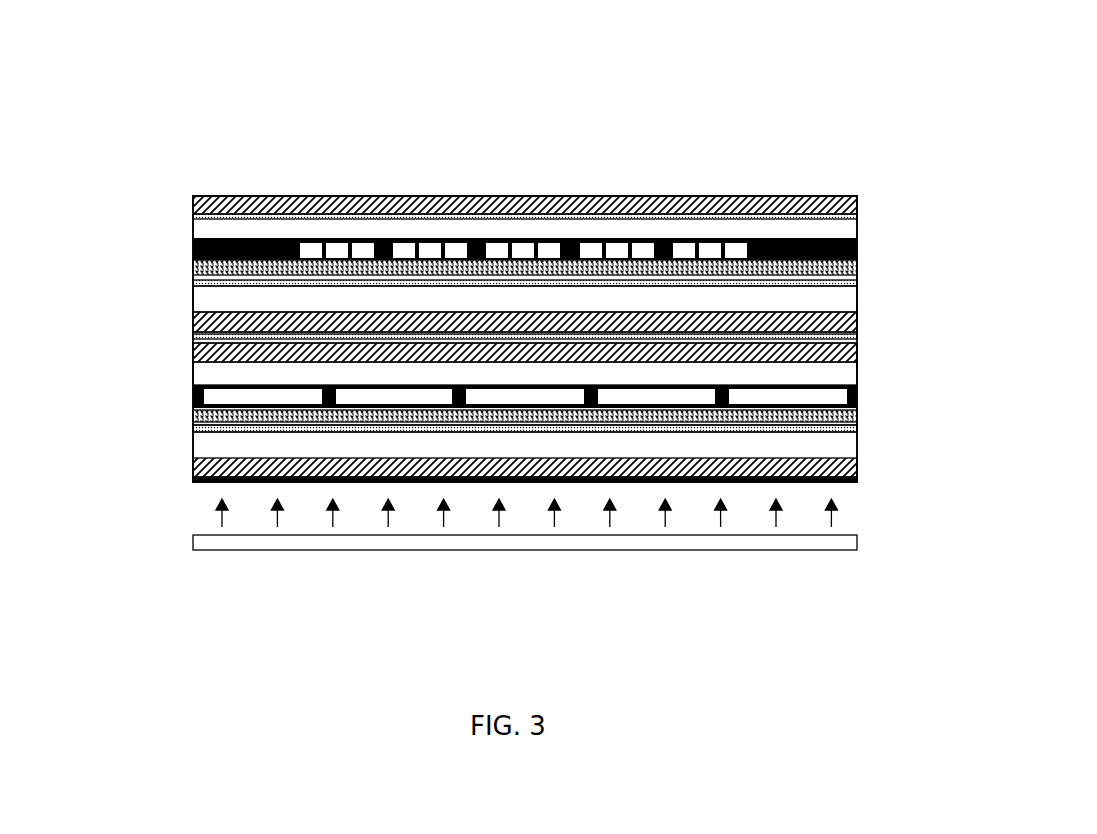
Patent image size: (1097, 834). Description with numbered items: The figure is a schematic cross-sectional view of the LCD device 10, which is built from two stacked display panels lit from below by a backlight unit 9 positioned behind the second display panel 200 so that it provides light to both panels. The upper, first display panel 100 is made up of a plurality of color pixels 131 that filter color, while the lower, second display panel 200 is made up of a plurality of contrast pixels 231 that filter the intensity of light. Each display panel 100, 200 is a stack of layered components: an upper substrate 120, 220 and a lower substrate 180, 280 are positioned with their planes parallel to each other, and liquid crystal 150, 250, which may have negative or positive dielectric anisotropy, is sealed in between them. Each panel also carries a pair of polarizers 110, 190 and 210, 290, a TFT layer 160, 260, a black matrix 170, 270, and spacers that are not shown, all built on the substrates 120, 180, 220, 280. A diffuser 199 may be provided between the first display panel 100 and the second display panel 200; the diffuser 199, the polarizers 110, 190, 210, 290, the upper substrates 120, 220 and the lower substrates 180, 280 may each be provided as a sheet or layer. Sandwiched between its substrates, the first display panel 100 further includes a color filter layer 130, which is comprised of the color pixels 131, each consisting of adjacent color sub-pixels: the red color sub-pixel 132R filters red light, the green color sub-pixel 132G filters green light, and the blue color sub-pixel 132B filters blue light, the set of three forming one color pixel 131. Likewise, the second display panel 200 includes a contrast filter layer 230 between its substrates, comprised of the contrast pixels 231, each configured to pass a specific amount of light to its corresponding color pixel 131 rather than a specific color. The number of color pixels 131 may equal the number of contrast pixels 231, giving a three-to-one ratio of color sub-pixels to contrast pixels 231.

The backlight unit 9 is at (700, 550).
The LCD device 10 is at (875, 143).
The first display panel 100 is at (898, 197).
The second display panel 200 is at (898, 340).
The polarizer 110 is at (190, 203).
The upper substrate 120 is at (190, 217).
The color filter layer 130 is at (190, 246).
The color pixel 131 is at (630, 78).
The red color sub-pixel 132R is at (493, 240).
The green color sub-pixel 132G is at (530, 240).
The blue color sub-pixel 132B is at (567, 240).
The black matrix 170 is at (290, 240).
The liquid crystal 150 is at (190, 264).
The TFT layer 160 is at (190, 272).
The lower substrate 180 is at (190, 292).
The polarizer 190 is at (190, 313).
The diffuser 199 is at (190, 336).
The polarizer 210 is at (190, 352).
The upper substrate 220 is at (190, 372).
The contrast filter layer 230 is at (190, 400).
The contrast pixel 231 is at (787, 385).
The liquid crystal 250 is at (190, 416).
The TFT layer 260 is at (190, 428).
The black matrix 270 is at (850, 428).
The lower substrate 280 is at (190, 460).
The polarizer 290 is at (190, 480).